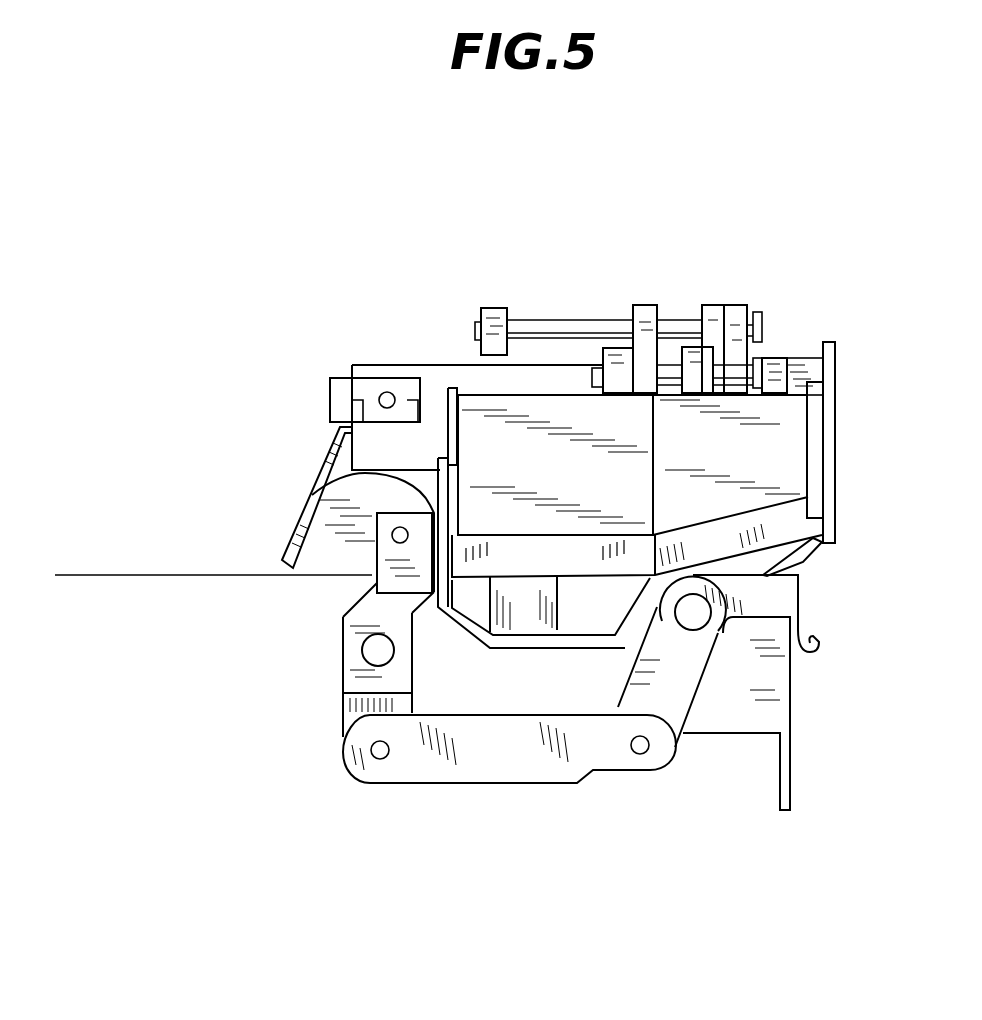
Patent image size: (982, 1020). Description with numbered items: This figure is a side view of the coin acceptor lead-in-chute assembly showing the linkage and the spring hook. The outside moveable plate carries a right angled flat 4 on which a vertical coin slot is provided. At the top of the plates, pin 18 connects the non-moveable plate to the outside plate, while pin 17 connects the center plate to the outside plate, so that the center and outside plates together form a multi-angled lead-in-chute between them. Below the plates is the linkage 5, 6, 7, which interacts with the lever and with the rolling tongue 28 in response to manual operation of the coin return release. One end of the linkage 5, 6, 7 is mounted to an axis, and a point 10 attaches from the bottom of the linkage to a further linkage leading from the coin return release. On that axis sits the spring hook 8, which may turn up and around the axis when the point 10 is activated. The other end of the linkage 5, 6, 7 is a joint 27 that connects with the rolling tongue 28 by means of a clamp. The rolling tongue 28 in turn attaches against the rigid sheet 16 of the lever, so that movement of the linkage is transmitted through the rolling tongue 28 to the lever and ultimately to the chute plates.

The right angled flat 4 is at (836, 426).
The linkage 5 is at (819, 646).
The linkage 6 is at (543, 753).
The linkage 7 is at (368, 592).
The spring hook 8 is at (810, 557).
The point 10 is at (693, 605).
The rigid sheet 16 is at (313, 488).
The pin 17 is at (760, 370).
The pin 18 is at (760, 320).
The joint 27 is at (400, 533).
The rolling tongue 28 is at (338, 549).